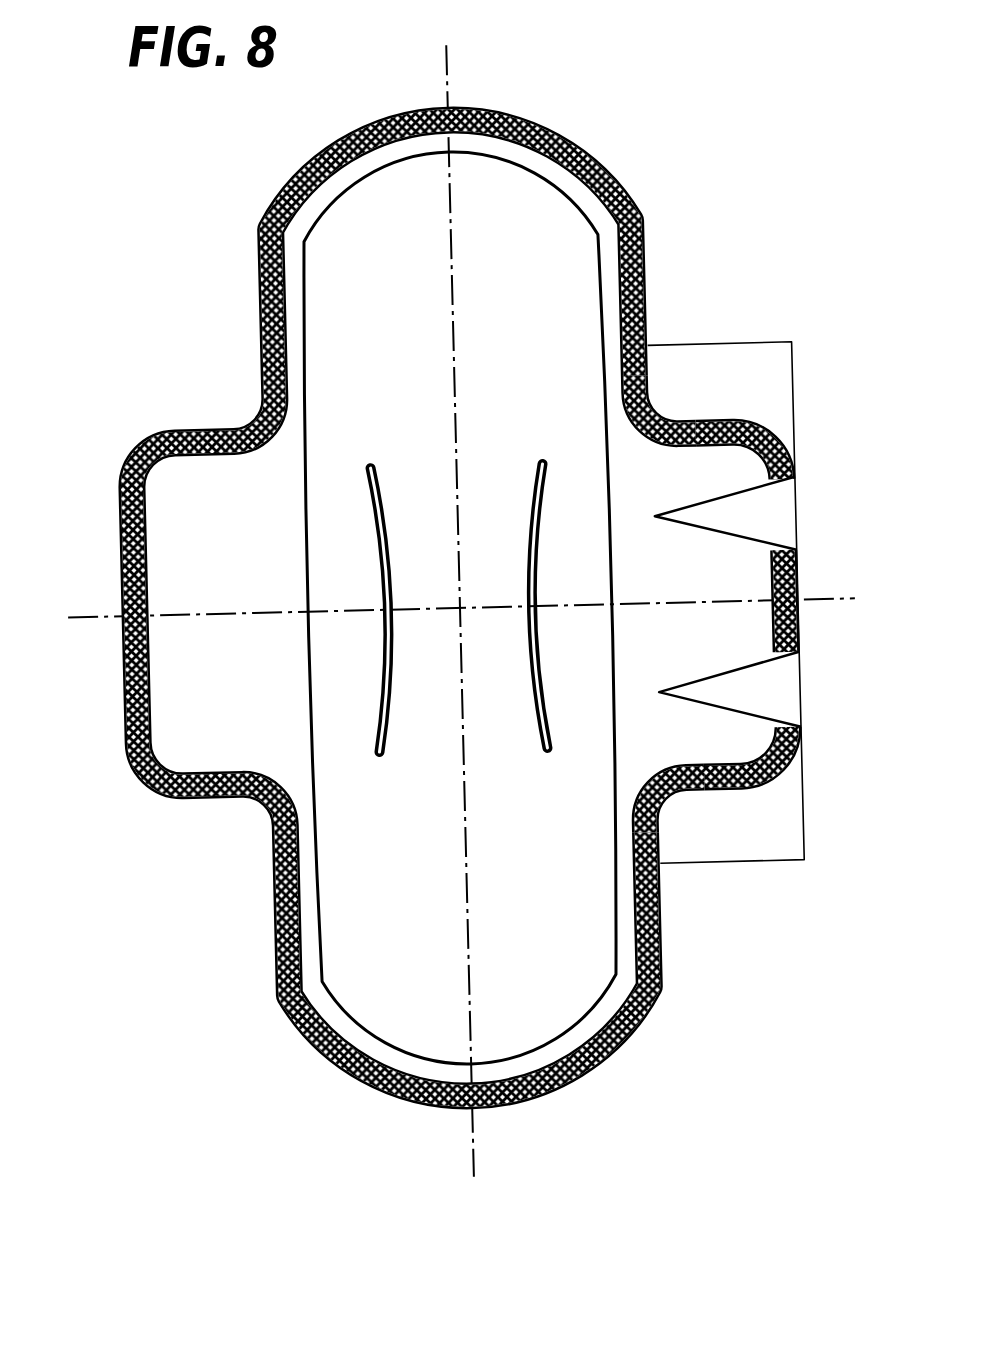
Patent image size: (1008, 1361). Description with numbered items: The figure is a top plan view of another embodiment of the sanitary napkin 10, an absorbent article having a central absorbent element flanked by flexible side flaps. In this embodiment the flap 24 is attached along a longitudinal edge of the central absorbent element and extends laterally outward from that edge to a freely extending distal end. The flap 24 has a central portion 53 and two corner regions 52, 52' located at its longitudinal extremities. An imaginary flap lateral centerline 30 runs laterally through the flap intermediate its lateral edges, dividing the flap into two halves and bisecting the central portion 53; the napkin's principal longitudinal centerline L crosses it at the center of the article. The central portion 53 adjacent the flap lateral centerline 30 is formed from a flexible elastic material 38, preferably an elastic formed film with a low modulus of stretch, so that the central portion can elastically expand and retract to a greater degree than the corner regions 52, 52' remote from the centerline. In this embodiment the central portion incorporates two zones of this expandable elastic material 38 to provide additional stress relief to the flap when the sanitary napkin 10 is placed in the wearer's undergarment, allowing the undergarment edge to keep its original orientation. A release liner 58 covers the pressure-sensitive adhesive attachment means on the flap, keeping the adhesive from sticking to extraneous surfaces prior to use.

The sanitary napkin 10 is at (638, 133).
The side flap 24 is at (772, 437).
The flap lateral centerline 30 is at (75, 617).
The flexible elastic material 38 is at (768, 508).
The corner region 52 is at (679, 362).
The corner region 52' is at (766, 793).
The central portion 53 is at (747, 588).
The release liner 58 is at (727, 863).
The longitudinal centerline L is at (447, 62).